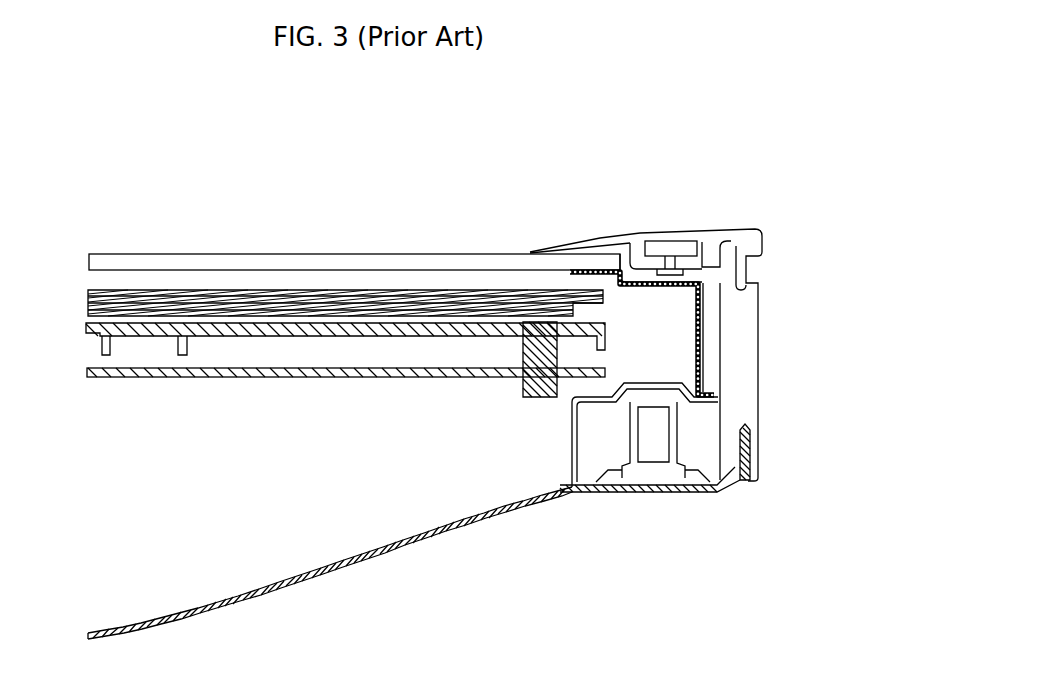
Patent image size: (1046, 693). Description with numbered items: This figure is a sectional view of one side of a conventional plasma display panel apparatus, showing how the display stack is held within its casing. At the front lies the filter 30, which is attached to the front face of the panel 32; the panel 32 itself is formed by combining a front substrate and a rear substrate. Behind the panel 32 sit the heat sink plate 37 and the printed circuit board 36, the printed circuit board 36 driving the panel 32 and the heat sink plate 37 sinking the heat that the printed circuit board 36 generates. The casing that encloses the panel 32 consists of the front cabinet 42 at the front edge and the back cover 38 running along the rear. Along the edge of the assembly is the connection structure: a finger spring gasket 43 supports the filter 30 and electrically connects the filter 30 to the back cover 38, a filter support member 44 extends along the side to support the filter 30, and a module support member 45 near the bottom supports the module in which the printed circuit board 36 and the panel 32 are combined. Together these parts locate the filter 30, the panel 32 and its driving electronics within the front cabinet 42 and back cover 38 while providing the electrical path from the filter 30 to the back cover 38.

The filter 30 is at (139, 261).
The panel 32 is at (78, 287).
The heat sink plate 37 is at (90, 330).
The printed circuit board 36 is at (105, 377).
The back cover 38 is at (722, 493).
The front cabinet 42 is at (724, 234).
The finger spring gasket 43 is at (585, 272).
The filter support member 44 is at (700, 330).
The module support member 45 is at (718, 397).